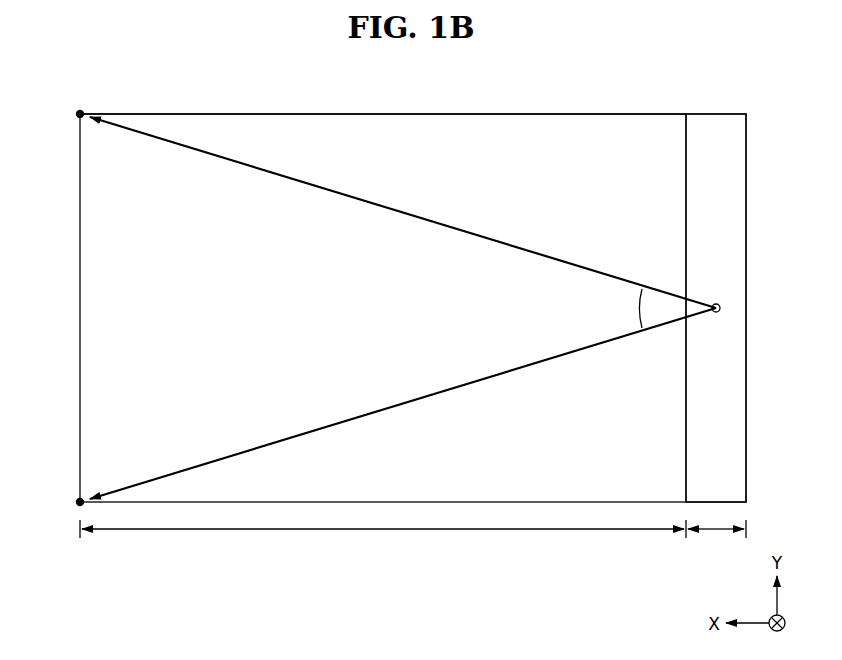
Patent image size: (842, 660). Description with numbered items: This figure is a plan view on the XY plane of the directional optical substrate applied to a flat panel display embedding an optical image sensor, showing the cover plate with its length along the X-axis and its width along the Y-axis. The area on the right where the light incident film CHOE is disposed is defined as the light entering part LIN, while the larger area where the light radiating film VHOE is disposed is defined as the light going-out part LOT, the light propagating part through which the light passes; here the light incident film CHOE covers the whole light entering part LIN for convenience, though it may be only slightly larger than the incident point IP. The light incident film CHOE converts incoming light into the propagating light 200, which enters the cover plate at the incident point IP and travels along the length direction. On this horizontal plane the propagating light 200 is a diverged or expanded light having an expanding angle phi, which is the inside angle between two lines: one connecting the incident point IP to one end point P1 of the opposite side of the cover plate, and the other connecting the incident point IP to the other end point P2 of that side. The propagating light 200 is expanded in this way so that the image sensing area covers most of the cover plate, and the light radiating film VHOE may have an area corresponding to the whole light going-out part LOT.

The propagating light 200 is at (523, 247).
The one end point of the opposite side of the cover plate P1 is at (80, 110).
The other end point of the opposite side of the cover plate P2 is at (78, 505).
The incident point IP is at (720, 308).
The light radiating film VHOE is at (569, 116).
The light incident film CHOE is at (714, 120).
The light going-out part LOT is at (383, 536).
The light entering part LIN is at (717, 537).
The expanding angle phi is at (631, 308).